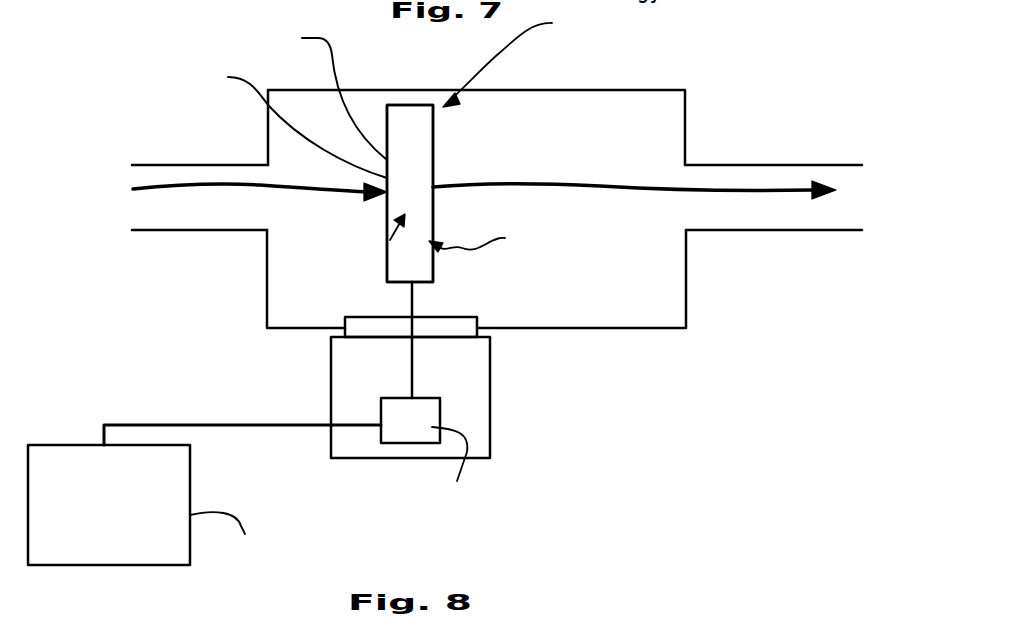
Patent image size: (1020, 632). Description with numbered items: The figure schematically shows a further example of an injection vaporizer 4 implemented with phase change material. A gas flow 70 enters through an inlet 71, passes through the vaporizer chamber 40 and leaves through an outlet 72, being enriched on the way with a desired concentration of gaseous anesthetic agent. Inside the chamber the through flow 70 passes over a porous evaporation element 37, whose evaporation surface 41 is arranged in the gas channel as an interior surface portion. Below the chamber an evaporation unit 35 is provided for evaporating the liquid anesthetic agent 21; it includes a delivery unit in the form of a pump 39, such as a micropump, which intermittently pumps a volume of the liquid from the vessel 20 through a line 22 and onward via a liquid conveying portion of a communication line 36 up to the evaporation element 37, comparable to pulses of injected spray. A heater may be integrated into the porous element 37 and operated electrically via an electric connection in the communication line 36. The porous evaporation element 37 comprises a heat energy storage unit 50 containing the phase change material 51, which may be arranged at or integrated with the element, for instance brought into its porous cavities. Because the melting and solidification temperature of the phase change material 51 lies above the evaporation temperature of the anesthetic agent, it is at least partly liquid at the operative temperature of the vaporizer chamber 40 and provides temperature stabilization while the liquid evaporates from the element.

The injection vaporizer 4 is at (745, 365).
The vessel 20 is at (67, 445).
The liquid anesthetic agent 21 is at (162, 494).
The liquid supply tube 22 is at (147, 424).
The evaporation unit 35 is at (527, 397).
The communication line 36 is at (413, 293).
The porous evaporation element 37 is at (329, 95).
The pump 39 is at (441, 454).
The vaporizer chamber 40 is at (648, 89).
The evaporation surface 41 is at (398, 106).
The heat energy storage unit 50 is at (417, 103).
The phase change material 51 is at (390, 240).
The gas flow 70 is at (268, 183).
The inlet 71 is at (209, 201).
The outlet 72 is at (759, 176).